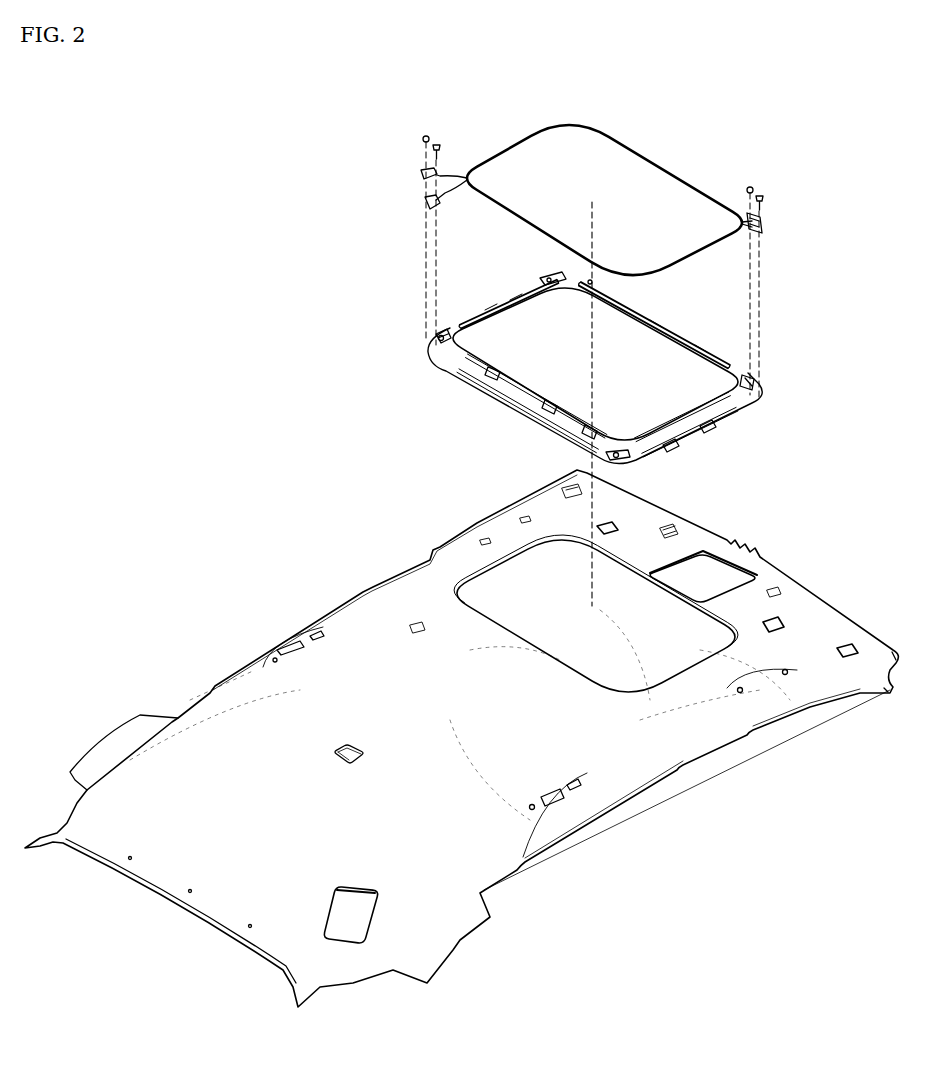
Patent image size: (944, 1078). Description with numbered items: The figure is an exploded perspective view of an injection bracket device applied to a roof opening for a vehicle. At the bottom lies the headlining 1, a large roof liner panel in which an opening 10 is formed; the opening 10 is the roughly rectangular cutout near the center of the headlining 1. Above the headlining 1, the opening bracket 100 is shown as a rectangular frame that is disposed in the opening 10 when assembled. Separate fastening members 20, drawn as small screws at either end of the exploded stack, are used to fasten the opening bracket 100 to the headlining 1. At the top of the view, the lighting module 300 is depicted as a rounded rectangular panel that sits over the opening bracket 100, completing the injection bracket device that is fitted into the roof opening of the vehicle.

The headlining 1 is at (807, 623).
The opening 10 is at (478, 590).
The fastening members 20 is at (437, 146).
The opening bracket 100 is at (720, 416).
The lighting module 300 is at (627, 138).